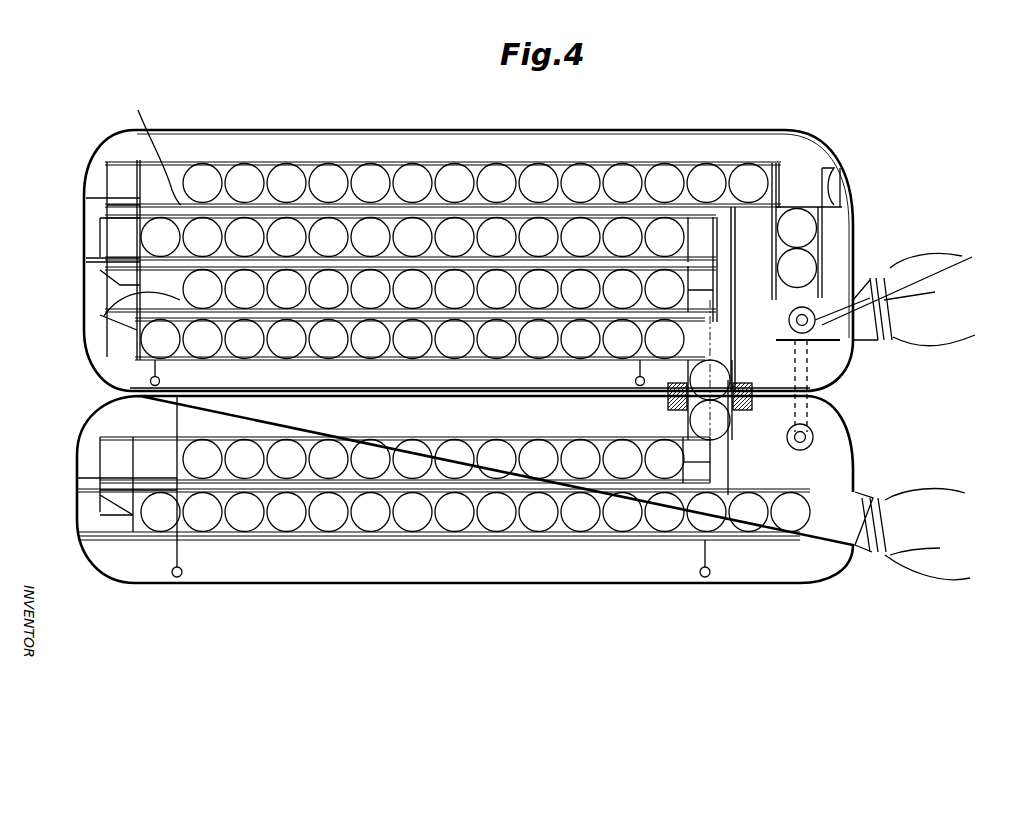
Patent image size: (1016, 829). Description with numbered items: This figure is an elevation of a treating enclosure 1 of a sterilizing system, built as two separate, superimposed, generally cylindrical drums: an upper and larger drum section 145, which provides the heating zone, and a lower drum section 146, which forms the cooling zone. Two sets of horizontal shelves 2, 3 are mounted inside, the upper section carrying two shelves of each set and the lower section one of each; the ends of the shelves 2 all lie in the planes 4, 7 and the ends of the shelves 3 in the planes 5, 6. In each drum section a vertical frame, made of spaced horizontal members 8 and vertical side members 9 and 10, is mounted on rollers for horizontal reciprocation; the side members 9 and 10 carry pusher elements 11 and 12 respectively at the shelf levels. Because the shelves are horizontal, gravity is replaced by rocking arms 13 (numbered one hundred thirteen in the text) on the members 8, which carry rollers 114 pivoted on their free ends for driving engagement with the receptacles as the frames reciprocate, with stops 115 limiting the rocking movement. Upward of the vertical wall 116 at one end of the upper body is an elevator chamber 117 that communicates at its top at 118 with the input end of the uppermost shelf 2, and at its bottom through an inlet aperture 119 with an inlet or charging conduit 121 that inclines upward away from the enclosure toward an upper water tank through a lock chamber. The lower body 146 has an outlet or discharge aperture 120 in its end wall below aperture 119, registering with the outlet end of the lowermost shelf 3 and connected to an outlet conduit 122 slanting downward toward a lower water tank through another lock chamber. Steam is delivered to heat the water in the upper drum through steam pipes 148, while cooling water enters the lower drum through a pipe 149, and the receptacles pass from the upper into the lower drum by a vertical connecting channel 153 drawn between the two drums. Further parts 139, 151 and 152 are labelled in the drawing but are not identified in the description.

The treating enclosure 1 is at (316, 392).
The shelves 2 is at (70, 341).
The shelves 3 is at (103, 284).
The plane 4 is at (120, 215).
The plane 5 is at (676, 364).
The plane 6 is at (86, 198).
The plane 7 is at (716, 345).
The horizontal members 8 is at (700, 163).
The vertical side member 9 is at (108, 260).
The vertical side member 10 is at (716, 246).
The pusher elements 11 is at (120, 229).
The pusher elements 12 is at (703, 291).
The cylindrical containers 13 is at (392, 163).
The rollers 114 is at (636, 163).
The stops 115 is at (558, 163).
The vertical wall 116 is at (813, 251).
The elevator chamber 117 is at (828, 338).
The top communication of elevator chamber 118 is at (784, 202).
The inlet aperture 119 is at (828, 303).
The outlet or discharge aperture 120 is at (835, 515).
The inlet or charging conduit 121 is at (930, 310).
The outlet conduit 122 is at (924, 548).
The tray rails 139 is at (716, 177).
The upper drum section 145 is at (265, 131).
The lower drum section 146 is at (262, 583).
The steam pipes 148 is at (913, 285).
The cooling water pipe 149 is at (814, 438).
The coupling flange 151 is at (697, 360).
The coupling flange 152 is at (730, 386).
The vertical connecting channel 153 is at (690, 408).